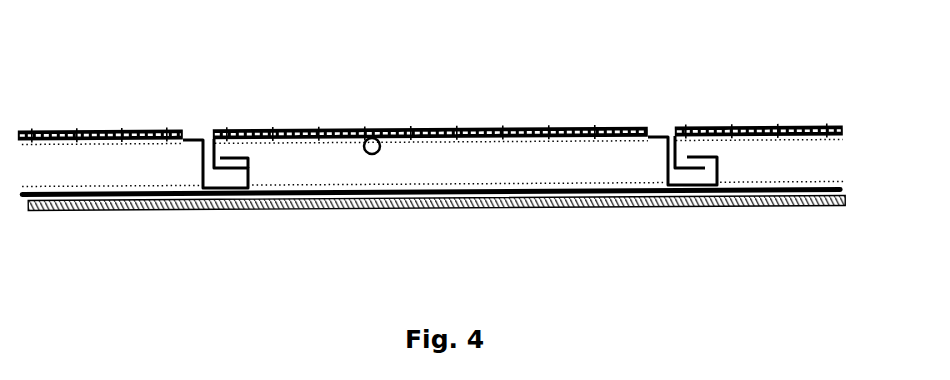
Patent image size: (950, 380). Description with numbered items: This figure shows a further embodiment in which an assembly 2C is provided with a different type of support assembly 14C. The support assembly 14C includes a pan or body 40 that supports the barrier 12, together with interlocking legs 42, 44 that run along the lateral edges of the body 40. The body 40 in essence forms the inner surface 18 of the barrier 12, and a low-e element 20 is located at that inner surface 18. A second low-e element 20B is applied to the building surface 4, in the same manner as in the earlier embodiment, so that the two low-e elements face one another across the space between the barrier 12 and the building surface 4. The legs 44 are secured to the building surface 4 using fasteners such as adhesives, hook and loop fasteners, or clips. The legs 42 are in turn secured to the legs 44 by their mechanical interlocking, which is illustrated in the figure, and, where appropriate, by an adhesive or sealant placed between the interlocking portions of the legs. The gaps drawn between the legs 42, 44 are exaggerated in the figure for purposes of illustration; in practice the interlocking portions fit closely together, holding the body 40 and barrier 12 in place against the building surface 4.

The assembly 2C is at (452, 42).
The barrier 12 is at (513, 127).
The support assembly 14C is at (658, 136).
The inner surface 18 is at (372, 128).
The building surface 4 is at (378, 190).
The pan or body 40 is at (494, 167).
The interlocking legs 42 is at (220, 154).
The interlocking legs 44 is at (202, 168).
The low-e element 20 is at (815, 142).
The low-e element 20B is at (810, 182).